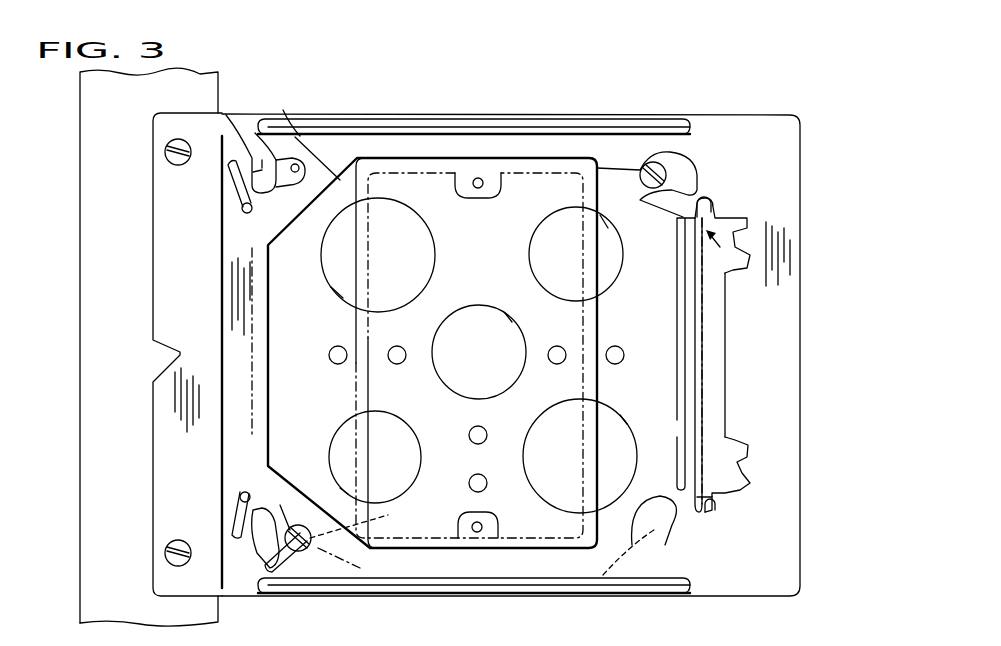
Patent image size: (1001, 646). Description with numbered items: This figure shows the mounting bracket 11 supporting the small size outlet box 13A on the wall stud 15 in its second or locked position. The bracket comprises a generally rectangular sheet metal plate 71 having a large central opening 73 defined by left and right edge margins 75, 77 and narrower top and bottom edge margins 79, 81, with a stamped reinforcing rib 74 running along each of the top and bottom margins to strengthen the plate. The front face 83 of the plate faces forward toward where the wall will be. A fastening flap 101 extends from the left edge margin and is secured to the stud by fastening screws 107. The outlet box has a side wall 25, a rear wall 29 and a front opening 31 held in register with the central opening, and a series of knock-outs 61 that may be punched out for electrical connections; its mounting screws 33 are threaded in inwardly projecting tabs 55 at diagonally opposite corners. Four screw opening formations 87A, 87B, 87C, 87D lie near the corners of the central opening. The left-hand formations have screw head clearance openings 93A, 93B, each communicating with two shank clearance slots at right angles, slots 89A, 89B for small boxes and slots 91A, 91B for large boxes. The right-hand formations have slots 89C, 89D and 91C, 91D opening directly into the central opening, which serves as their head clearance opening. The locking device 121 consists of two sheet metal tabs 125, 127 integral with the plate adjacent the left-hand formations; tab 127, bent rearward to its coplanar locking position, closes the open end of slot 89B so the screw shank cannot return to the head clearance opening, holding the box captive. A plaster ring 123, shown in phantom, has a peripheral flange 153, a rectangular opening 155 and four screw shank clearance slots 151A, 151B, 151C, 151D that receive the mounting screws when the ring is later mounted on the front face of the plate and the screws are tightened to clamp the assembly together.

The mounting bracket 11 is at (762, 92).
The outlet box 13A is at (693, 307).
The wall stud 15 is at (80, 263).
The side wall 25 is at (698, 380).
The rear wall 29 is at (488, 222).
The front opening 31 is at (680, 292).
The outlet box mounting screw 33 is at (642, 185).
The inwardly projecting tab 55 is at (645, 173).
The knock-out 61 is at (413, 210).
The sheet metal plate 71 is at (803, 453).
The central opening 73 is at (272, 303).
The reinforcing rib 74 is at (594, 118).
The left edge margin 75 is at (245, 352).
The right edge margin 77 is at (765, 397).
The top edge margin 79 is at (427, 143).
The bottom edge margin 81 is at (514, 565).
The front face 83 is at (768, 572).
The screw opening formation 87A is at (287, 103).
The screw opening formation 87B is at (269, 500).
The screw opening formation 87C is at (745, 262).
The screw opening formation 87D is at (660, 475).
The screw shank clearance slot 89A is at (336, 112).
The screw shank clearance slot 89B is at (385, 517).
The screw shank clearance slot 89C is at (643, 160).
The screw shank clearance slot 89D is at (648, 545).
The screw shank clearance slot 91A is at (243, 210).
The screw shank clearance slot 91B is at (240, 502).
The screw shank clearance slot 91C is at (720, 212).
The screw shank clearance slot 91D is at (705, 508).
The screw head clearance opening 93A is at (257, 150).
The screw head clearance opening 93B is at (233, 533).
The fastening flap 101 is at (185, 277).
The fastening screw 107 is at (170, 147).
The locking device 121 is at (247, 128).
The plaster ring 123 is at (580, 312).
The sheet metal tab 125 is at (260, 172).
The sheet metal tab 127 is at (281, 505).
The screw shank clearance slot 151A is at (435, 197).
The screw shank clearance slot 151B is at (318, 548).
The screw shank clearance slot 151C is at (700, 180).
The screw shank clearance slot 151D is at (630, 598).
The peripheral flange 153 is at (663, 343).
The rectangular opening 155 is at (583, 390).